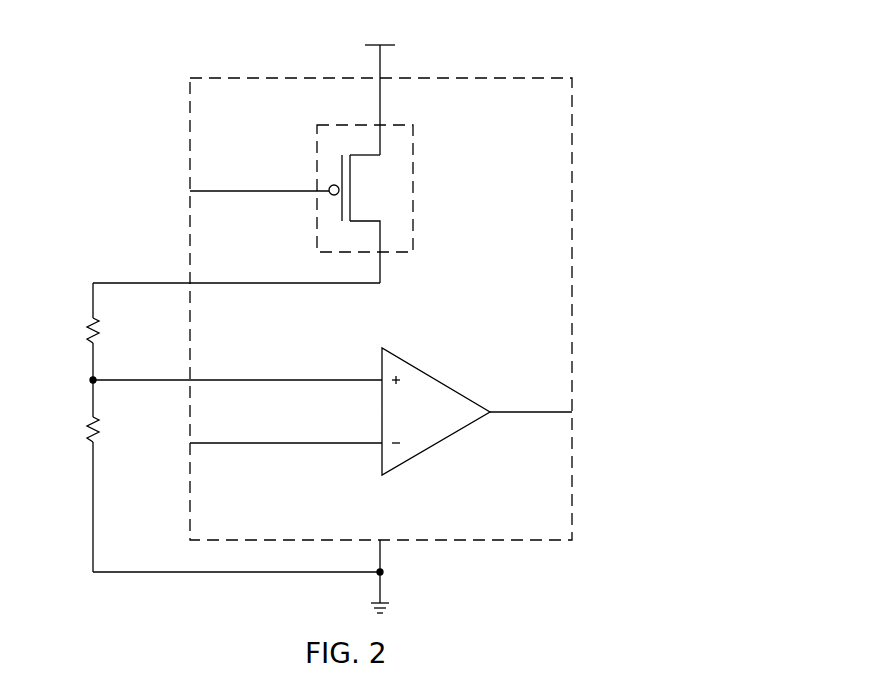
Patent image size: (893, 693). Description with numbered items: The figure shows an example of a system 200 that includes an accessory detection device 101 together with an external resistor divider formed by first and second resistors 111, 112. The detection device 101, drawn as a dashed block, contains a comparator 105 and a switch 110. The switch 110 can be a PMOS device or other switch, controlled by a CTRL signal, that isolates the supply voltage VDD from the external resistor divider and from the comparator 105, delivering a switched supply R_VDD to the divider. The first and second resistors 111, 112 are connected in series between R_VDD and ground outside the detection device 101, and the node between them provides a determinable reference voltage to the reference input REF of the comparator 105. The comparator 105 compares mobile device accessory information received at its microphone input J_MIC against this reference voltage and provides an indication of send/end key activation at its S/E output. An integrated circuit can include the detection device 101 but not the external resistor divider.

The system 200 is at (417, 321).
The accessory detection device 101 is at (359, 292).
The switch 110 is at (413, 191).
The comparator 105 is at (443, 383).
The first resistor 111 is at (128, 320).
The second resistor 112 is at (128, 418).